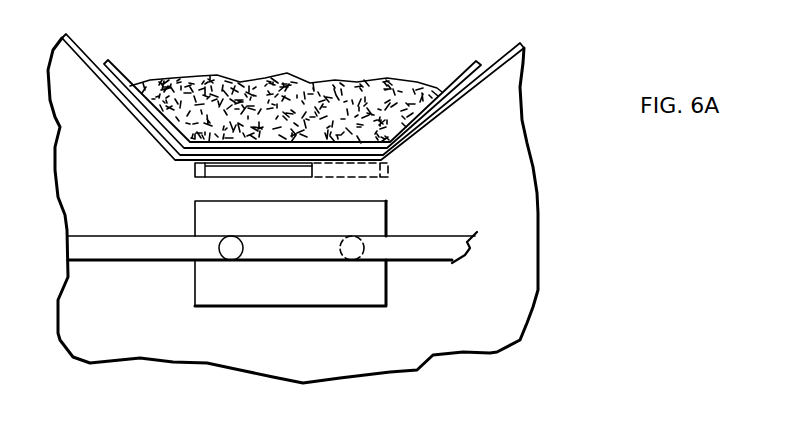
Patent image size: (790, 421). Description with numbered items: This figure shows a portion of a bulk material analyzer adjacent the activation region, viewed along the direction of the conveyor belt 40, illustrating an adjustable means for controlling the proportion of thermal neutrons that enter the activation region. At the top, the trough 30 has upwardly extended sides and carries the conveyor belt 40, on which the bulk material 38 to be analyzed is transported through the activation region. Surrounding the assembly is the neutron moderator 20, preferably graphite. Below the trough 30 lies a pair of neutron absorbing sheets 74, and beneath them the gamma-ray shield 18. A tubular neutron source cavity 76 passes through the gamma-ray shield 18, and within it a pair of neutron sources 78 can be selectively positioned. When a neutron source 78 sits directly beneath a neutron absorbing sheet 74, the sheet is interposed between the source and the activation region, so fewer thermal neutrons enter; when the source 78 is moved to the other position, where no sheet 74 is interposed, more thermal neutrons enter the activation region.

The neutron moderator 20 is at (507, 185).
The trough 30 is at (498, 72).
The conveyor belt 40 is at (463, 71).
The bulk material 38 is at (330, 84).
The neutron absorbing sheet 74 is at (207, 178).
The gamma-ray shield 18 is at (313, 293).
The tubular neutron source cavity 76 is at (477, 258).
The neutron source 78 is at (227, 249).